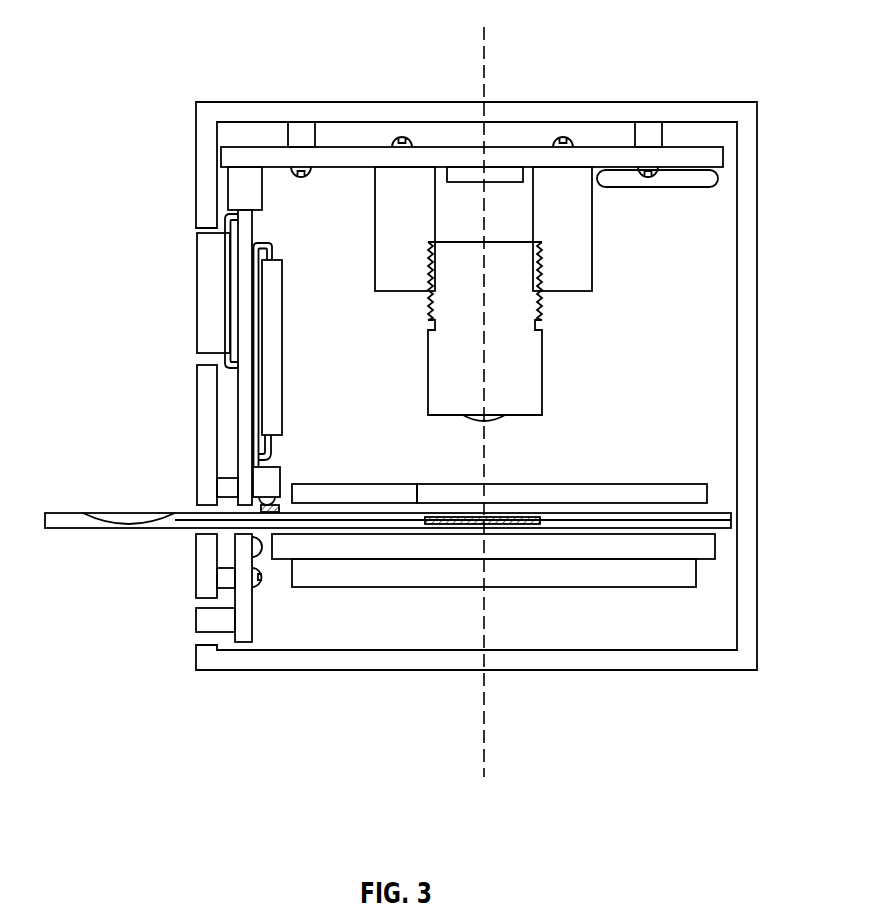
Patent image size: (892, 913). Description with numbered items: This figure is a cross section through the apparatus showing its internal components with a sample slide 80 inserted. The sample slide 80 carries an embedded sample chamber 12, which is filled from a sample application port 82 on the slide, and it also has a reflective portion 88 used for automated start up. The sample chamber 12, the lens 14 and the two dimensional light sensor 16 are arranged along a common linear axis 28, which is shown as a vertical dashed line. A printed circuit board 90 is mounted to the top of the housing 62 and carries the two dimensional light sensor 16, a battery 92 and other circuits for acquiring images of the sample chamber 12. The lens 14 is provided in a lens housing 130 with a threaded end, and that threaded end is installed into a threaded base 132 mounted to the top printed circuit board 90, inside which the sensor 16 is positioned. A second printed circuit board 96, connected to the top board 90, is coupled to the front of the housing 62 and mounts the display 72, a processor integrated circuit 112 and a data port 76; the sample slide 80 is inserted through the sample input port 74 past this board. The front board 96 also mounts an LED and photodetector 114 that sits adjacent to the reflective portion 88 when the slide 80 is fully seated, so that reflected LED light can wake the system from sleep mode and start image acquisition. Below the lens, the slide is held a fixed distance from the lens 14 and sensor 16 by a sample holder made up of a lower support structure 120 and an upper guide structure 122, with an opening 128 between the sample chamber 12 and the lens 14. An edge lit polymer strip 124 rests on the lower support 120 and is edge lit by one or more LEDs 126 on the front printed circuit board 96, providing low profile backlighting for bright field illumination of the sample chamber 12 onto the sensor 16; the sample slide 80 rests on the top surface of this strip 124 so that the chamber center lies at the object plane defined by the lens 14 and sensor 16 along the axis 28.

The sample chamber 12 is at (497, 526).
The lens 14 is at (487, 420).
The two dimensional light sensor 16 is at (497, 183).
The common linear axis 28 is at (487, 52).
The housing 62 is at (750, 328).
The display 72 is at (208, 296).
The sample input port 74 is at (204, 509).
The data port 76 is at (196, 620).
The sample slide 80 is at (74, 528).
The sample application port 82 is at (108, 513).
The reflective portion 88 is at (282, 495).
The printed circuit board 90 is at (363, 158).
The battery 92 is at (698, 188).
The second printed circuit board 96 is at (250, 236).
The processor integrated circuit 112 is at (271, 333).
The LED and photodetector 114 is at (272, 462).
The lower support structure 120 is at (380, 583).
The upper guide structure 122 is at (377, 490).
The edge lit strip 124 is at (630, 546).
The LED 126 is at (260, 550).
The opening 128 is at (545, 490).
The lens housing 130 is at (446, 377).
The threaded base 132 is at (580, 268).